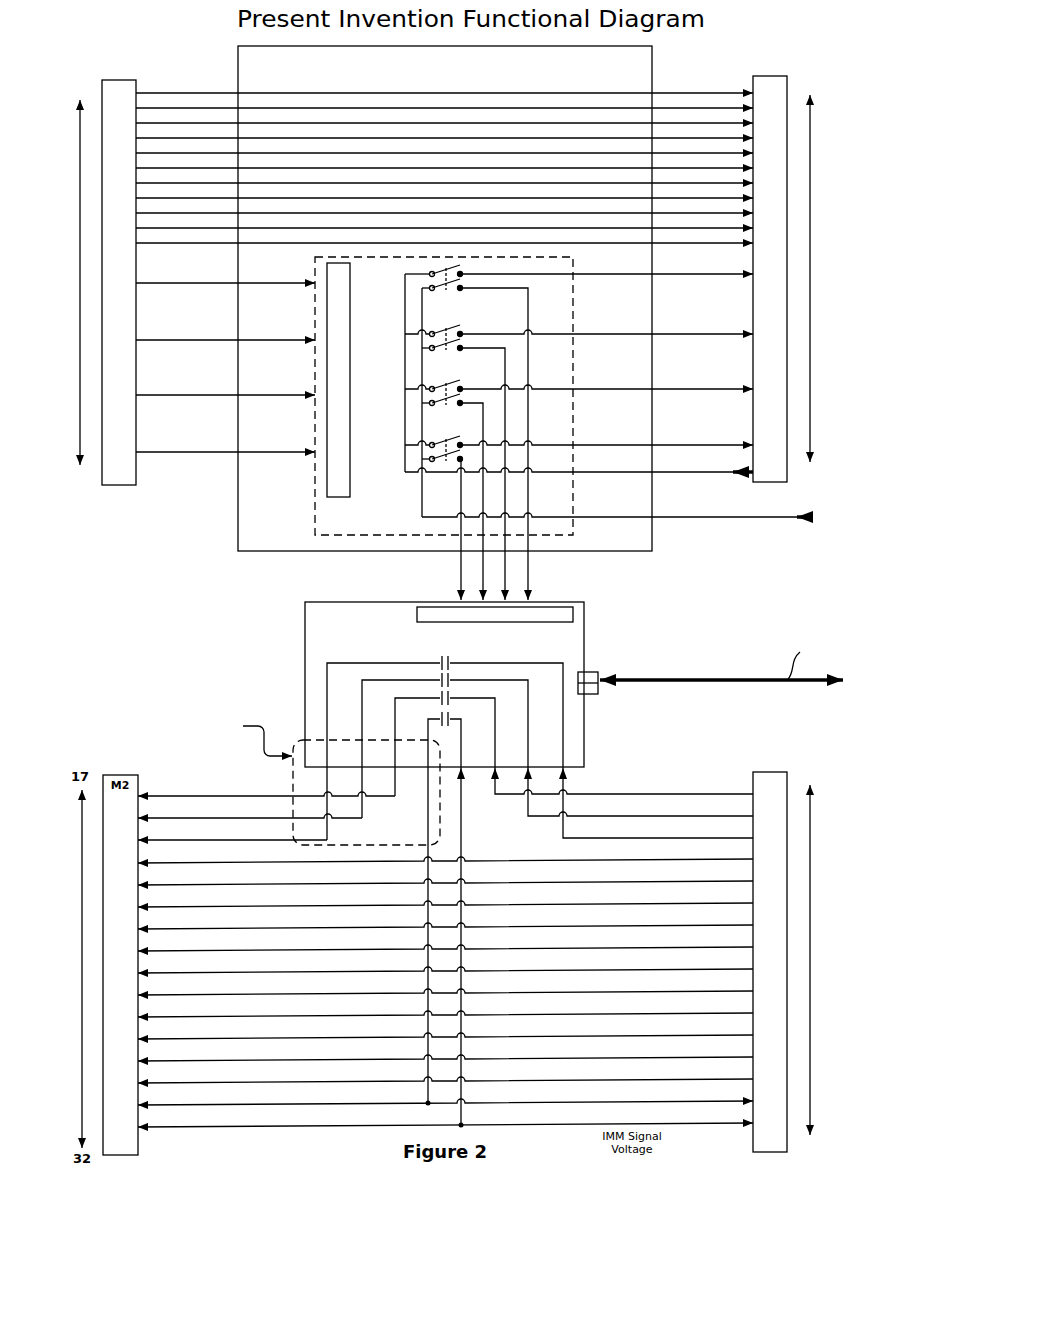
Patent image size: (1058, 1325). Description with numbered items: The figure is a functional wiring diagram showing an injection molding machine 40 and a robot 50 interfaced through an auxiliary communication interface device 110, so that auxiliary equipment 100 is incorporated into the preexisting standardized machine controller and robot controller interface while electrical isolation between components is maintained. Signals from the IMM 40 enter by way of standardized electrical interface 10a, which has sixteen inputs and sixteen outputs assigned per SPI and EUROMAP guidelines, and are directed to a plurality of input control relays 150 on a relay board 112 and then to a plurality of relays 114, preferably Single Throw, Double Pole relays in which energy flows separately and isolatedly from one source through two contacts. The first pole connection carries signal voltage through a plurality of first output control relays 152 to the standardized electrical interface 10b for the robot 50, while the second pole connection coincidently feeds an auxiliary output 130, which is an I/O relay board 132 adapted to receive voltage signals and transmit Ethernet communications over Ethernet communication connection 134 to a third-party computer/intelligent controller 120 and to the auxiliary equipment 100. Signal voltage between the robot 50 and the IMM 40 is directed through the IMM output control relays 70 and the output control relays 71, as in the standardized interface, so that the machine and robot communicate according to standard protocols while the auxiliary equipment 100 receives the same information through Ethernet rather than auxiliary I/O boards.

The standardized electrical interface 10a is at (137, 78).
The standardized electrical interface 10b is at (753, 83).
The injection molding machine 40 is at (103, 487).
The robot 50 is at (785, 76).
The IMM output control relays 70 is at (134, 468).
The output control relays 71 is at (763, 1133).
The auxiliary equipment 100 is at (580, 629).
The auxiliary communication interface device 110 is at (200, 623).
The relay board 112 is at (258, 542).
The plurality of relays 114 is at (383, 552).
The third-party computer/intelligent controller 120 is at (596, 697).
The auxiliary output 130 is at (688, 683).
The I/O relay board 132 is at (582, 651).
The Ethernet communication connection 134 is at (815, 656).
The plurality of input control relays 150 is at (322, 456).
The plurality of first output control relays 152 is at (548, 518).